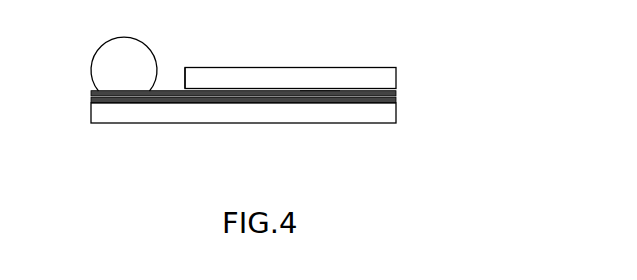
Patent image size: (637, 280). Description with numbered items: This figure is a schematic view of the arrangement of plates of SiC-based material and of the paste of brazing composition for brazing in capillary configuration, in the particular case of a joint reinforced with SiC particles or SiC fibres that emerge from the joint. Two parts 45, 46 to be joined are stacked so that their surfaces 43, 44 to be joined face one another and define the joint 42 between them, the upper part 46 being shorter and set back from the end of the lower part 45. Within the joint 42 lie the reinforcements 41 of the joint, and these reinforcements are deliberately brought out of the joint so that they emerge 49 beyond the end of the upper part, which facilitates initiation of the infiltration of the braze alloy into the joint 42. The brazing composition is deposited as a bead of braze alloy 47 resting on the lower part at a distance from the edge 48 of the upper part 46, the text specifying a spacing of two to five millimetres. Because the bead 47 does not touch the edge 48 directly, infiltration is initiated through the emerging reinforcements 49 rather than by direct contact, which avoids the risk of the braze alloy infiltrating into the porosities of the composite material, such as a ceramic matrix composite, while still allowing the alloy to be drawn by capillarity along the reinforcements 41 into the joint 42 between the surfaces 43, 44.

The reinforcements 41 is at (224, 97).
The joint 42 is at (276, 133).
The surface to be joined 43 is at (317, 104).
The surface to be joined 44 is at (316, 90).
The part to be joined 45 is at (347, 115).
The part to be joined 46 is at (363, 82).
The bead of braze alloy 47 is at (112, 60).
The edge of the part 48 is at (183, 78).
The emergence of the reinforcements 49 is at (150, 92).